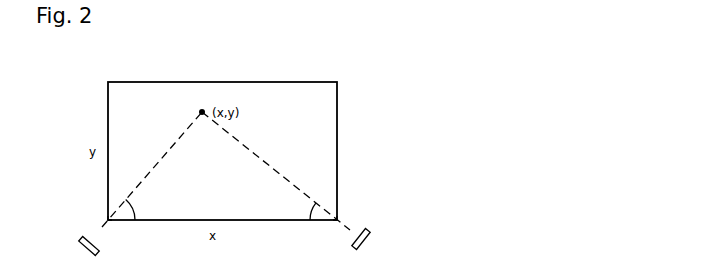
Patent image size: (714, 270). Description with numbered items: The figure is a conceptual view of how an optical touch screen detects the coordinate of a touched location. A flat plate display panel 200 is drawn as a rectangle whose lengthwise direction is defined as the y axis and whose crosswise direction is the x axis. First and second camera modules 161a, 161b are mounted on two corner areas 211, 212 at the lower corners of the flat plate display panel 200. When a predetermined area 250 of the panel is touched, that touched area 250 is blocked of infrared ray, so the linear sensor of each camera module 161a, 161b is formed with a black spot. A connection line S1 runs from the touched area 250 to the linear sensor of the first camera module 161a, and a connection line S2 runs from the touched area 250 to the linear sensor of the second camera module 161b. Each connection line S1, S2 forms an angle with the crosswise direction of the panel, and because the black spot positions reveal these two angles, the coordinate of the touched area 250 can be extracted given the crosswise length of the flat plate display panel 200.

The flat plate display panel 200 is at (260, 82).
The touched predetermined area 250 is at (199, 112).
The connection line S1 is at (152, 169).
The connection line S2 is at (264, 161).
The corner area 211 is at (108, 220).
The corner area 212 is at (337, 220).
The first camera module 161a is at (82, 249).
The second camera module 161b is at (369, 233).